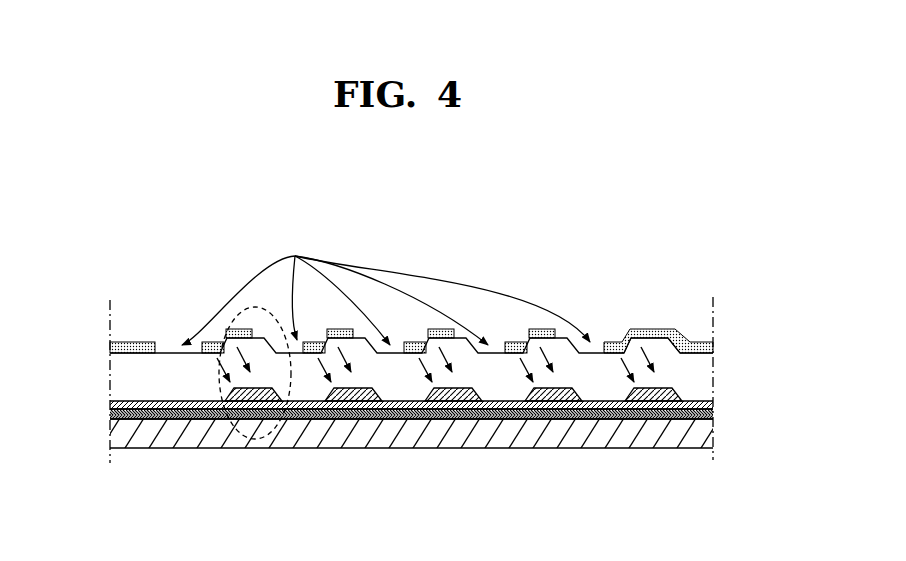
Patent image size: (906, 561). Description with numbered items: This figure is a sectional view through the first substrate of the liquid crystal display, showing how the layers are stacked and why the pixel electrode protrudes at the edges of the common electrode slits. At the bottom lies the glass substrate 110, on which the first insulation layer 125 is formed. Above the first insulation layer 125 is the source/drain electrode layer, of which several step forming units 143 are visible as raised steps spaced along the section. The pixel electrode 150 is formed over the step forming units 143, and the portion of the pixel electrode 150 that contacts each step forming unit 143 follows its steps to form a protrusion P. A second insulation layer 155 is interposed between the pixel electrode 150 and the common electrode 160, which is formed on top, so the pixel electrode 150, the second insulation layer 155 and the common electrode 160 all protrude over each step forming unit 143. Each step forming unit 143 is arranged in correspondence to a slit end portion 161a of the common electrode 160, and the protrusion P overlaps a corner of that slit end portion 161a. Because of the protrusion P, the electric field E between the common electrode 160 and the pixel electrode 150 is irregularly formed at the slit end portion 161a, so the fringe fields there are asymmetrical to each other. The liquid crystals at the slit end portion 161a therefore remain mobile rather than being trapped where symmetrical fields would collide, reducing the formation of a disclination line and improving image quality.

The glass substrate 110 is at (680, 440).
The first insulation layer 125 is at (117, 417).
The step forming unit 143 is at (650, 410).
The pixel electrode 150 is at (707, 403).
The second insulation layer 155 is at (707, 367).
The common electrode 160 is at (667, 328).
The slit end portion 161a is at (386, 288).
The electric field E is at (244, 373).
The protrusion P is at (266, 438).